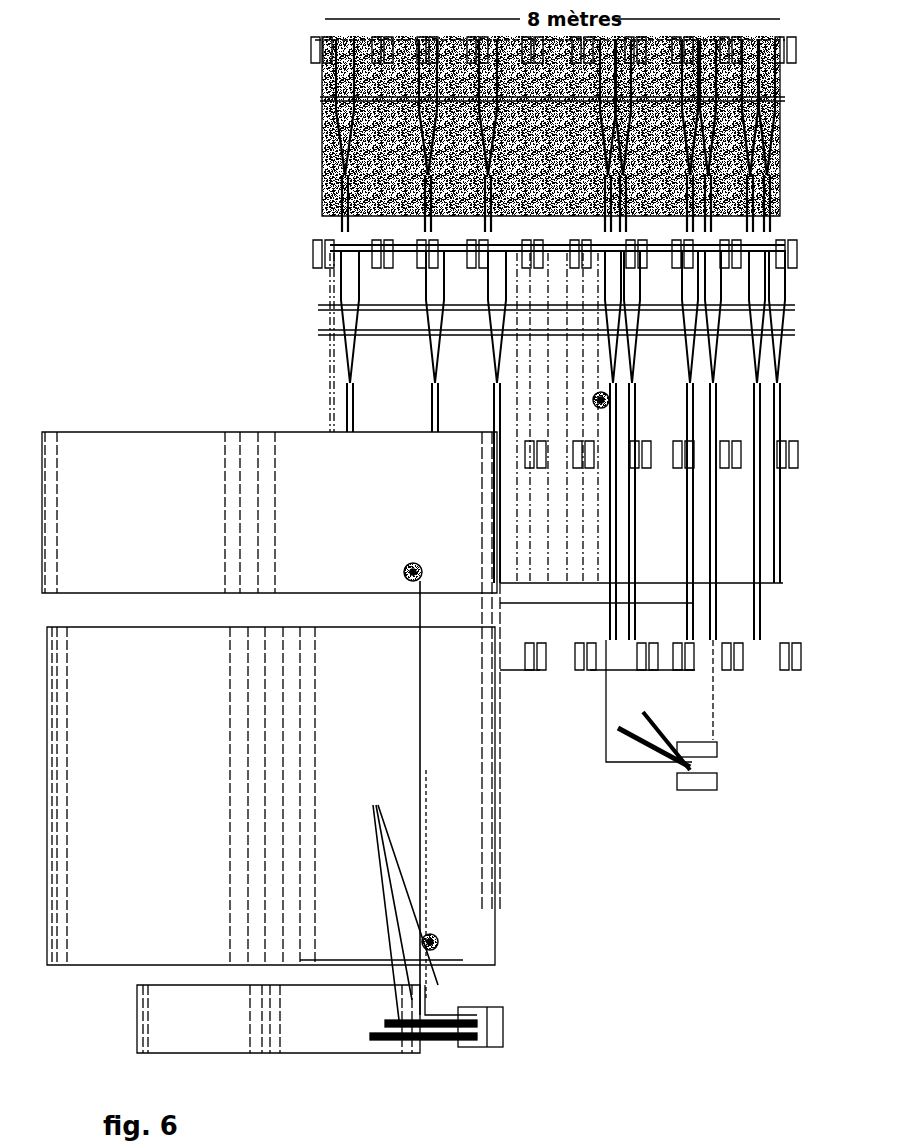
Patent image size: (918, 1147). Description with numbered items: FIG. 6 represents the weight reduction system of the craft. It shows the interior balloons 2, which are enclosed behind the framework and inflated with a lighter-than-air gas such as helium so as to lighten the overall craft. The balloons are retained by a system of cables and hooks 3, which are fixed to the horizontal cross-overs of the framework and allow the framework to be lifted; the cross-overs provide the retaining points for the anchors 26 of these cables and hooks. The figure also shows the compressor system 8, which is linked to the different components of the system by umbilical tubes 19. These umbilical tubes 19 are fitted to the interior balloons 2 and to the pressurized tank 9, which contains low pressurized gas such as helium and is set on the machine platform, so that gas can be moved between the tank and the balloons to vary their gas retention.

The interior balloons 2 is at (350, 190).
The cables and hooks 3 is at (350, 380).
The anchors 26 is at (725, 643).
The umbilical tubes 19 is at (420, 782).
The compressor system 8 is at (489, 1032).
The pressurized tank 9 is at (190, 1017).